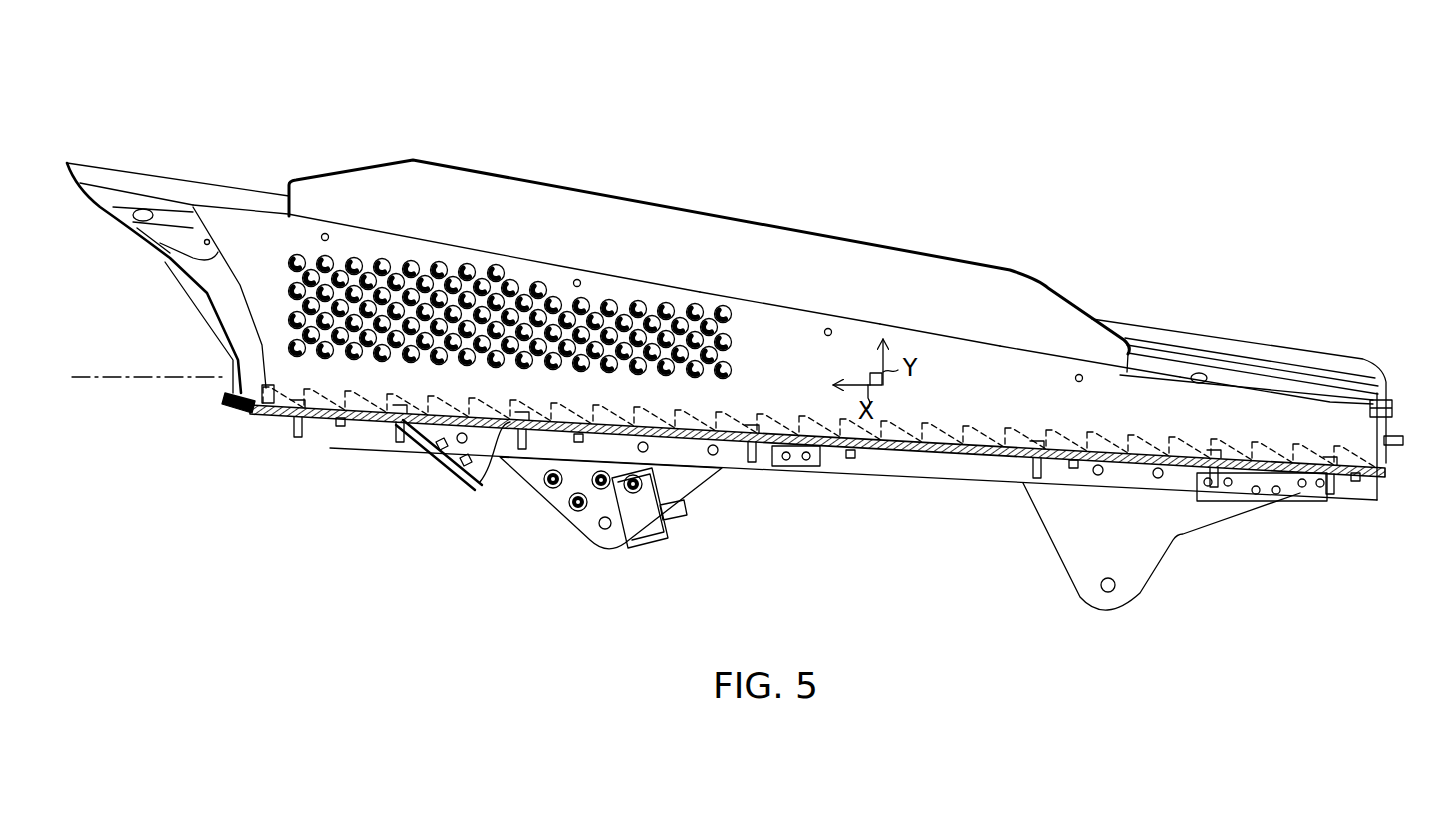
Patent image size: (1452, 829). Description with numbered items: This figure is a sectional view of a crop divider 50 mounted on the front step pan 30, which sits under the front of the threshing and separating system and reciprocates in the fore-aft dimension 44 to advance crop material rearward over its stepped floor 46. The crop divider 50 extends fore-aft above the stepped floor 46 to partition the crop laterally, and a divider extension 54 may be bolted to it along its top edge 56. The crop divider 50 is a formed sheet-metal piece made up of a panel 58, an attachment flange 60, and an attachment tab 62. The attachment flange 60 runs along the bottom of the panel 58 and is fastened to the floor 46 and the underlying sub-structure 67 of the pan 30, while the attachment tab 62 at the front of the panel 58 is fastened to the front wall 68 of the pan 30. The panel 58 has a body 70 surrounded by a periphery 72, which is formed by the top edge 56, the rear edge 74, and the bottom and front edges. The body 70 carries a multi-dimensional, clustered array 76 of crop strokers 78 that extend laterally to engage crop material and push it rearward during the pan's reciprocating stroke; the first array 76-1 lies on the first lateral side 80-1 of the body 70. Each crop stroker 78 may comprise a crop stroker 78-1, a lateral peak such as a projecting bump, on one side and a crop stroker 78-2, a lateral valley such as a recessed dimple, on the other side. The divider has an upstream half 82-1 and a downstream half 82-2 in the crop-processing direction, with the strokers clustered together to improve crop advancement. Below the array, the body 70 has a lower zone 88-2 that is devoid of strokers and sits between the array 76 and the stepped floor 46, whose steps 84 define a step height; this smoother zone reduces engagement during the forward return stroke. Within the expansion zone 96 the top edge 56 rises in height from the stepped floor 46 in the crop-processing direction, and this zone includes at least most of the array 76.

The front step pan 30 is at (1331, 343).
The fore-aft dimension 44 is at (110, 380).
The stepped floor 46 is at (522, 397).
The crop divider 50 is at (932, 342).
The divider extension 54 is at (345, 177).
The top edge 56 is at (790, 307).
The panel 58 is at (1114, 396).
The attachment flange 60 is at (1002, 450).
The attachment tab 62 is at (1380, 404).
The sub-structure 67 is at (896, 448).
The front wall 68 is at (1400, 441).
The body 70 is at (834, 349).
The periphery 72 is at (878, 326).
The rear edge 74 is at (162, 240).
The clustered array 76 is at (558, 272).
The first array 76-1 is at (601, 286).
The crop strokers 78 is at (407, 247).
The crop stroker 78-1 is at (298, 266).
The crop stroker 78-2 is at (302, 306).
The first lateral side 80-1 is at (1038, 380).
The upstream half 82-1 is at (942, 358).
The downstream half 82-2 is at (730, 380).
The steps 84 is at (445, 395).
The lower zone 88-2 is at (408, 245).
The expansion zone 96 is at (744, 312).